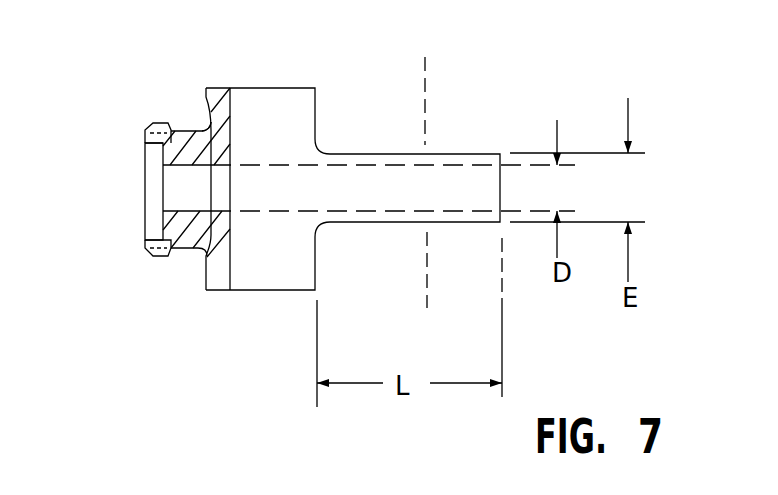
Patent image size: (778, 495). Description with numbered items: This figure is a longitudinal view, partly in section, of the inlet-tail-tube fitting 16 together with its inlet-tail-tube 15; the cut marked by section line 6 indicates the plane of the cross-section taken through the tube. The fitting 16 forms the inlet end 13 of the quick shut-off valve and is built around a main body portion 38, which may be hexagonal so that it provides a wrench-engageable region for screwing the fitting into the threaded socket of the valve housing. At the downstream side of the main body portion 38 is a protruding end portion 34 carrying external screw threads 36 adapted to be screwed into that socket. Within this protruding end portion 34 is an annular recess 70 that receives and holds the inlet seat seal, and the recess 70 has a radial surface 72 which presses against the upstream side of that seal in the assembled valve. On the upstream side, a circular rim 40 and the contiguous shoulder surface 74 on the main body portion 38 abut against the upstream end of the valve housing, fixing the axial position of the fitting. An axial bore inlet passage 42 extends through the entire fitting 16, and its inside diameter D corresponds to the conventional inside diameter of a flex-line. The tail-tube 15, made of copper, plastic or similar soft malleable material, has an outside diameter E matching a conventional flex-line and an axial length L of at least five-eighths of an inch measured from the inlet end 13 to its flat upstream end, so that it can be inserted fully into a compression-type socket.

The inlet-tail-tube fitting 16 is at (312, 60).
The main body portion 38 is at (290, 291).
The circular rim 40 is at (222, 88).
The downstream protruding end portion 34 is at (186, 250).
The shoulder surface 74 is at (204, 116).
The inlet end 13 is at (320, 140).
The inlet-tail-tube 15 is at (480, 153).
The axial bore inlet passage 42 is at (433, 165).
The annular recess 70 is at (145, 149).
The radial surface 72 is at (162, 163).
The external screw threads 36 is at (175, 247).
The section line 6- 6 is at (472, 293).